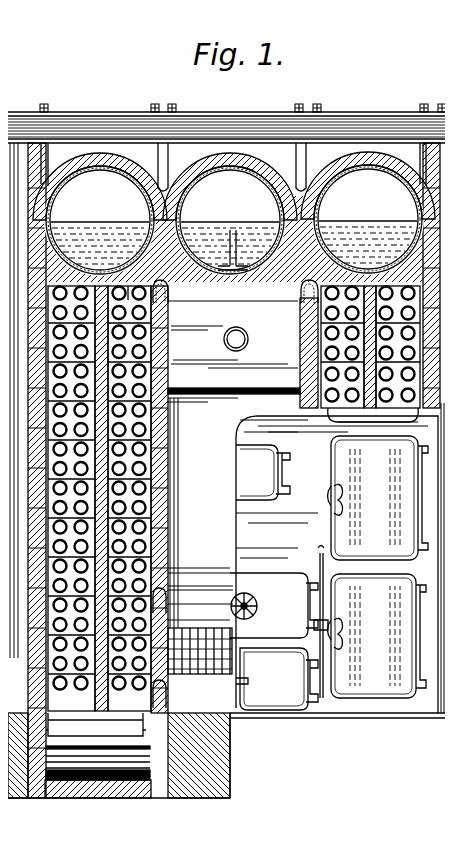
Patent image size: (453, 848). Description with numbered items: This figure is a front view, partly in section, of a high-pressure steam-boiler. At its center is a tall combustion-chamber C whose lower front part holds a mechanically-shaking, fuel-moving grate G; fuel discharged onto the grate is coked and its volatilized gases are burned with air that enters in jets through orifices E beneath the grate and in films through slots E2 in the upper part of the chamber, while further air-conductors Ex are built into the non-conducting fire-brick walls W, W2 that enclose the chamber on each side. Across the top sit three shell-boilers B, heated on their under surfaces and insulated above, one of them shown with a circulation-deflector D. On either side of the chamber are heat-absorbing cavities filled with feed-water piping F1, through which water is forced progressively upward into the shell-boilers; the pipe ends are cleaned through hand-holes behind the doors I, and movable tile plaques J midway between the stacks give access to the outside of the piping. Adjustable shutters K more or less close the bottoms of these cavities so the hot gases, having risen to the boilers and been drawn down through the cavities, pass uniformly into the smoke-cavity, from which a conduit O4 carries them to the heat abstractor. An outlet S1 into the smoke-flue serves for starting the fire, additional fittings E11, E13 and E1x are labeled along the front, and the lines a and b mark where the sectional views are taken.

The shell-boiler B is at (234, 217).
The circulation-deflector D is at (232, 242).
The movable plaque J is at (84, 690).
The water tube connection F1 is at (122, 284).
The air-conductor Ex is at (162, 286).
The slot E2 is at (165, 300).
The outlet S1 is at (240, 322).
The non-conducting wall W is at (292, 336).
The combustion-chamber C is at (234, 384).
The wall W2 is at (263, 431).
The door I is at (354, 600).
The damper pipe E11 is at (170, 588).
The pipe E13 is at (180, 588).
The pipe E1x is at (173, 687).
The orifice E is at (144, 690).
The grate G is at (200, 666).
The adjustable shutter K is at (76, 721).
The section line a is at (22, 83).
The section line b is at (185, 80).
The conduit O4 is at (452, 746).